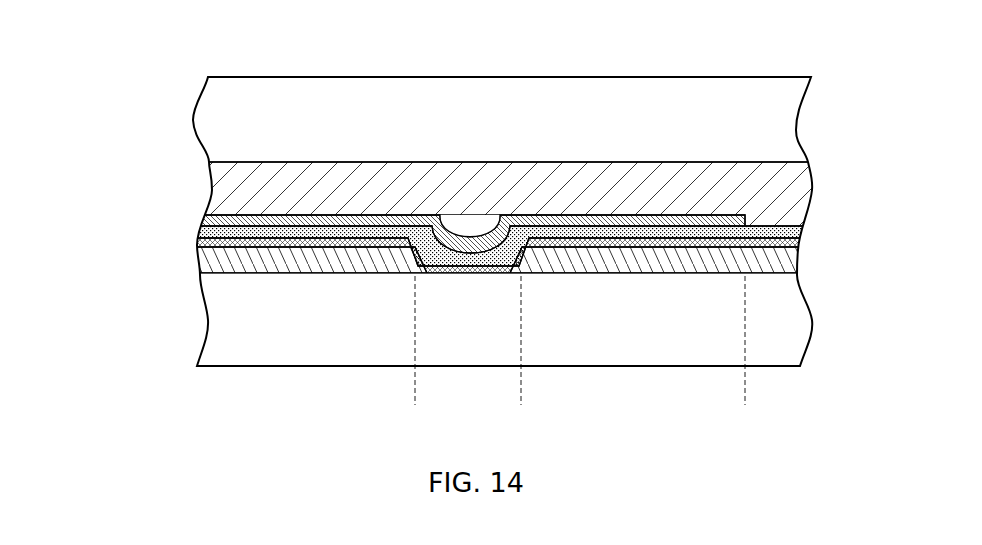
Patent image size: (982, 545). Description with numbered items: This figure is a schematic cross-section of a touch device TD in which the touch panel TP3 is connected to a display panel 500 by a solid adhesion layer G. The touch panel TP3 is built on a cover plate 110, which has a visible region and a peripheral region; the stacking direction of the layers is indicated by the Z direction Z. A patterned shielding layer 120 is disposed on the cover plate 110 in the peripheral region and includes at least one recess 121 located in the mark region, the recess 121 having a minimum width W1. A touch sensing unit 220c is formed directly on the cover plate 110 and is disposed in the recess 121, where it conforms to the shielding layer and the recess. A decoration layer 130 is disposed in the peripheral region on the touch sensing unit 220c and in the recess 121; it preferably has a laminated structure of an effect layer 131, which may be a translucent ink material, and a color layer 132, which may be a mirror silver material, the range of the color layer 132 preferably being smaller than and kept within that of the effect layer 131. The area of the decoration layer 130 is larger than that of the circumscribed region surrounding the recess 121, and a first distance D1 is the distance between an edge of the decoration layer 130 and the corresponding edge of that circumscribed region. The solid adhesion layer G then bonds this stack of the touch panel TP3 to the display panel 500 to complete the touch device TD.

The display panel 500 is at (215, 119).
The solid adhesion layer G is at (212, 196).
The decoration layer 130 is at (450, 234).
The color layer 132 is at (205, 220).
The effect layer 131 is at (205, 232).
The touch sensing unit 220c is at (203, 241).
The patterned shielding layer 120 is at (197, 258).
The recess 121 is at (463, 272).
The cover plate 110 is at (490, 319).
The touch panel TP3 is at (425, 279).
The minimum width W1 is at (521, 396).
The first distance D1 is at (745, 396).
The touch device TD is at (730, 61).
The Z direction Z is at (149, 382).